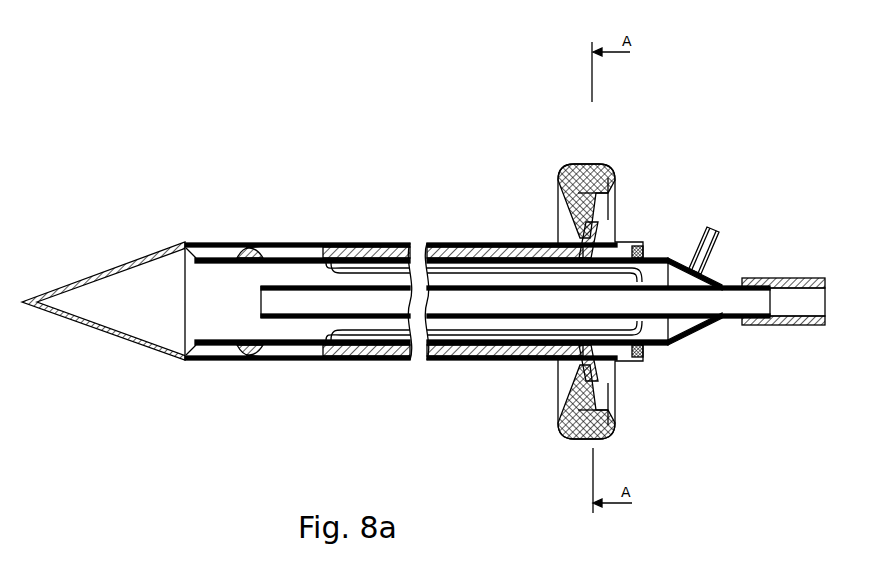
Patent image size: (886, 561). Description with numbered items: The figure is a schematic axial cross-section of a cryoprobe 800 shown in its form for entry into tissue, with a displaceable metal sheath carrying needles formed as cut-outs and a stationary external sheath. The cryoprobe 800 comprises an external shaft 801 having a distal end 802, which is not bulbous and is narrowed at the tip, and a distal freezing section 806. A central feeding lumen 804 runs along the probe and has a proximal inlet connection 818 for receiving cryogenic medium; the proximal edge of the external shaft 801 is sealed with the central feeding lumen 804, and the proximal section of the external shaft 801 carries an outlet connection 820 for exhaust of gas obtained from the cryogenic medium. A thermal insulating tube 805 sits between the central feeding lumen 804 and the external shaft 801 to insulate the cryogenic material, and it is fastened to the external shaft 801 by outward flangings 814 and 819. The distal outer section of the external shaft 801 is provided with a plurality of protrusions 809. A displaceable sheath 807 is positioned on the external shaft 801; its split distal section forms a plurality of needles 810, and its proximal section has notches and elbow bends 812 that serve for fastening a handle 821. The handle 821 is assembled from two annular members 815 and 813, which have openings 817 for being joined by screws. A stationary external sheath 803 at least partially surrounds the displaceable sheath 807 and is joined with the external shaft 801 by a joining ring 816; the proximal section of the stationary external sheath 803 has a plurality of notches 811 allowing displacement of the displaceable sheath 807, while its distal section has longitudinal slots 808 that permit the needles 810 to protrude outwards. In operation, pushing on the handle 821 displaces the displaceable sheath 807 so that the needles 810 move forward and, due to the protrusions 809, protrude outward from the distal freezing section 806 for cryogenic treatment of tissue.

The cryoprobe 800 is at (415, 150).
The external shaft 801 is at (345, 243).
The distal end 802 is at (78, 278).
The stationary external sheath 803 is at (475, 362).
The central feeding lumen 804 is at (513, 315).
The thermal insulating tube 805 is at (434, 263).
The distal freezing section 806 is at (218, 345).
The displaceable sheath 807 is at (370, 247).
The longitudinal slots 808 is at (259, 248).
The protrusions 809 is at (229, 250).
The needles 810 is at (297, 348).
The notches 811 is at (540, 243).
The elbow bends 812 is at (565, 170).
The annular member 813 is at (605, 385).
The outward flanging 814 is at (350, 347).
The annular member 815 is at (603, 165).
The joining ring 816 is at (647, 357).
The openings 817 is at (598, 442).
The proximal inlet connection 818 is at (783, 278).
The outward flanging 819 is at (647, 255).
The outlet connection 820 is at (697, 243).
The handle 821 is at (558, 442).